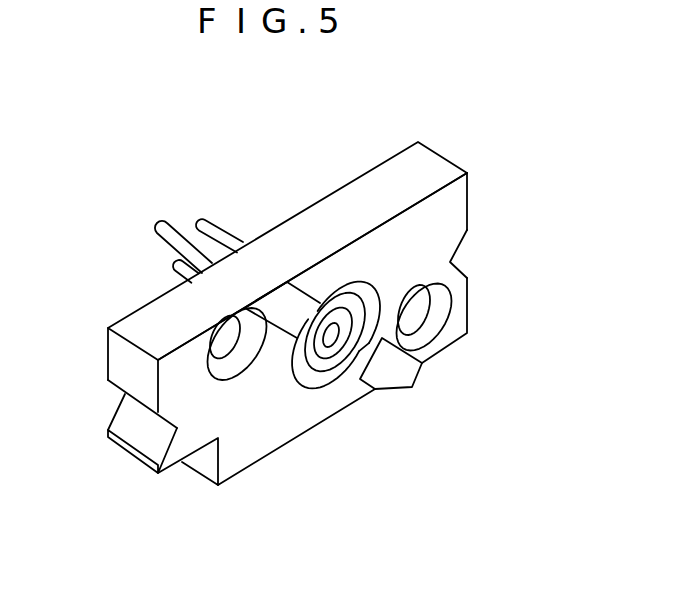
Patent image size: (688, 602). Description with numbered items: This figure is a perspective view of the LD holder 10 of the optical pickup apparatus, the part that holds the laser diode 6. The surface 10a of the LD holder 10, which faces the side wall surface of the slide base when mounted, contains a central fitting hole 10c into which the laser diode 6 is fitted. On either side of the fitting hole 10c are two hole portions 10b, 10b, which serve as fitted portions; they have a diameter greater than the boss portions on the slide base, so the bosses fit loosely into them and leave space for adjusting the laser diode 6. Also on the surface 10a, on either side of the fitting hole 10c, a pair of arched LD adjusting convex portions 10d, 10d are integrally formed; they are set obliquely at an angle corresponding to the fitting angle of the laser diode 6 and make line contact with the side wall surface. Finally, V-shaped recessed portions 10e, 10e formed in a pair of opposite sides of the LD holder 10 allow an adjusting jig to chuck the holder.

The laser diode 6 is at (344, 338).
The LD holder 10 is at (318, 238).
The surface 10a is at (288, 420).
The hole portions 10b is at (430, 318).
The fitting hole 10c is at (370, 282).
The LD adjusting convex portions 10d is at (290, 312).
The V-shaped recessed portions 10e is at (170, 450).